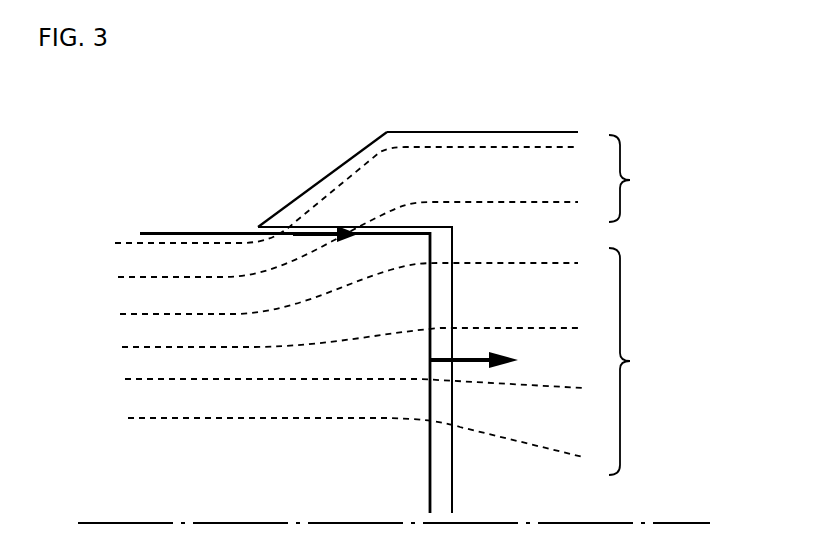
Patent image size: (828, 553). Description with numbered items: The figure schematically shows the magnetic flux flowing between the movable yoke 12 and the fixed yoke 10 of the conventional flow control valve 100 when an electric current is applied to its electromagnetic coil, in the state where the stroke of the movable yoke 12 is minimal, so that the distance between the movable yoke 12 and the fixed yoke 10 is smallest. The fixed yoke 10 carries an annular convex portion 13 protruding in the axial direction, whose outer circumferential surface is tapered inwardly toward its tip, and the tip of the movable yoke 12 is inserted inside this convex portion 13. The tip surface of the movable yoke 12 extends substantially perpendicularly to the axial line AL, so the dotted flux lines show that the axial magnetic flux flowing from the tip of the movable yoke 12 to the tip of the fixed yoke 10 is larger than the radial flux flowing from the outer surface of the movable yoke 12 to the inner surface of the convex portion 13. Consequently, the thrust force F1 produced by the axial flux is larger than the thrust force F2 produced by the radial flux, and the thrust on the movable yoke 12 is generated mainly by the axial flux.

The conventional flow control valve 100 is at (216, 84).
The fixed yoke 10 is at (515, 128).
The movable yoke 12 is at (160, 228).
The convex portion 13 is at (338, 168).
The thrust force F1 is at (463, 365).
The thrust force F2 is at (312, 237).
The axial line AL is at (652, 522).